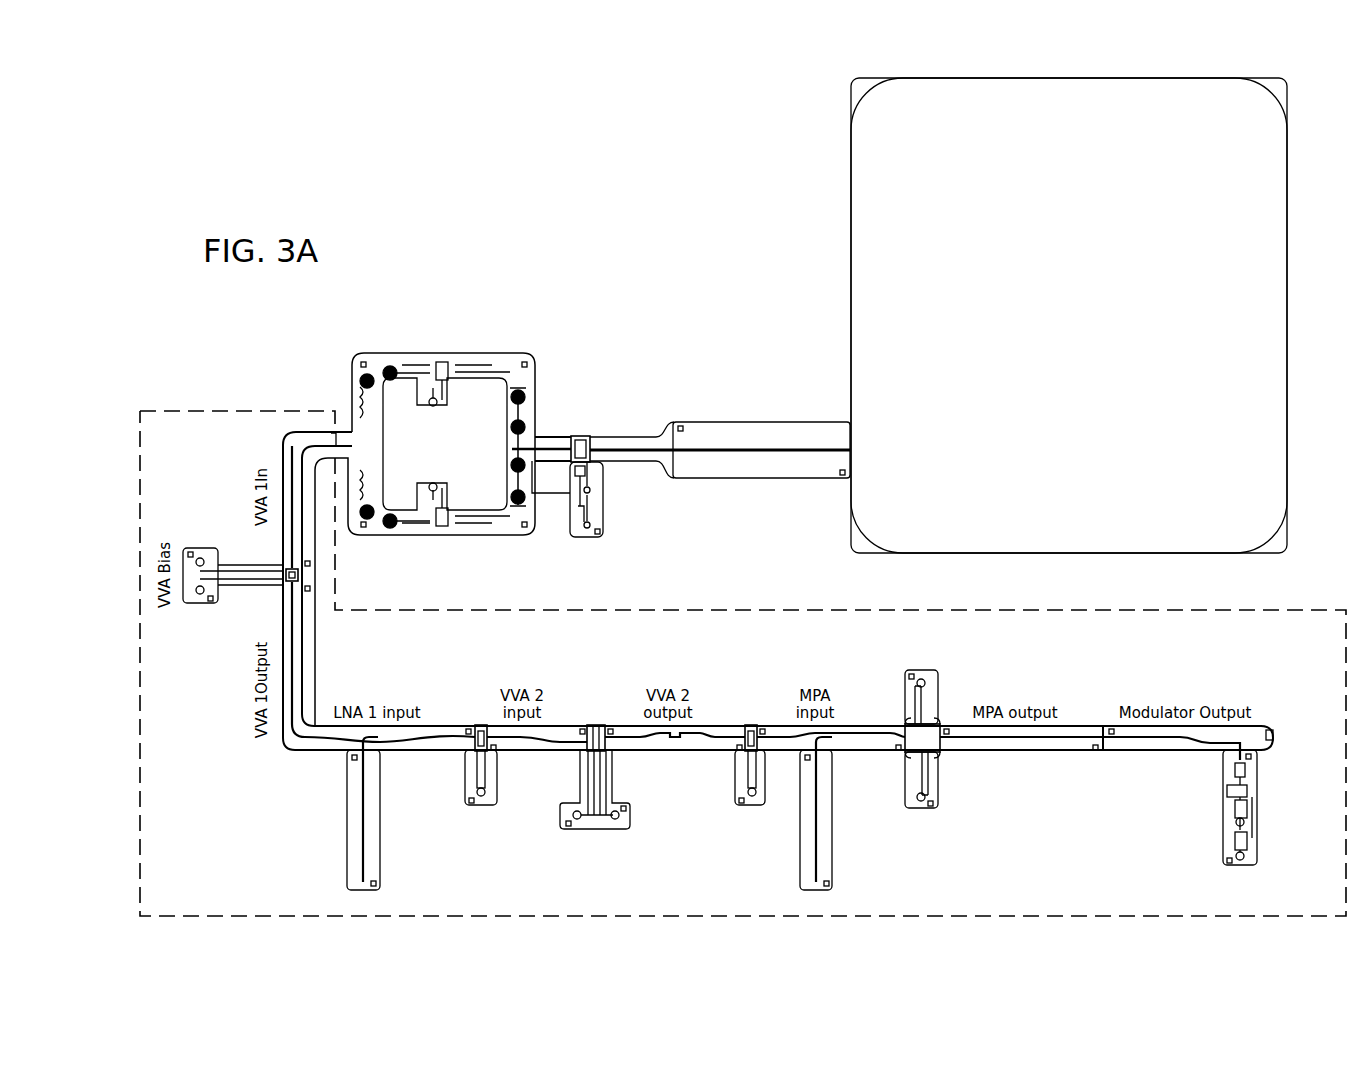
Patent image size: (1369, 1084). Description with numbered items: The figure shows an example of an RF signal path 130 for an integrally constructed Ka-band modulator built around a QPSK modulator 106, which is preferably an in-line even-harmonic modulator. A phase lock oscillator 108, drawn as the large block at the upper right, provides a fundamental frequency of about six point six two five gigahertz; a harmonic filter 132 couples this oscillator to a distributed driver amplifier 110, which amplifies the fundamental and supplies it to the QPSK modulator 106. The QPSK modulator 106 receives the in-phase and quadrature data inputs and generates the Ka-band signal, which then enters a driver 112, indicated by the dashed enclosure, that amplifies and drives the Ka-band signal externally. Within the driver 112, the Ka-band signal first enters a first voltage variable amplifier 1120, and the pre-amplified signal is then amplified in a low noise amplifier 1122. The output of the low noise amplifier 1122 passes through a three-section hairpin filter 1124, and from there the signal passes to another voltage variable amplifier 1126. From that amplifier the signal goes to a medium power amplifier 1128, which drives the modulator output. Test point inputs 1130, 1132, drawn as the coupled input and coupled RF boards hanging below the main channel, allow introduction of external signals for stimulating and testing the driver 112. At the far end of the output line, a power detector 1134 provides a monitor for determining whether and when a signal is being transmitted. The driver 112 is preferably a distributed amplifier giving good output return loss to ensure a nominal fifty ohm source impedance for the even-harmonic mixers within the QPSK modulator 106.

The QPSK modulator 106 is at (462, 453).
The phase lock oscillator 108 is at (1104, 335).
The distributed driver amplifier 110 is at (578, 437).
The driver 112 is at (140, 488).
The RF signal path 130 is at (592, 285).
The harmonic filter 132 is at (700, 425).
The first voltage variable amplifier 1120 is at (317, 580).
The low noise amplifier 1122 is at (482, 726).
The 3-section hairpin filter 1124 is at (596, 726).
The voltage variable amplifier 1126 is at (749, 726).
The medium power amplifier 1128 is at (938, 790).
The test point input 1130 is at (382, 881).
The test point input 1132 is at (835, 881).
The power detector 1134 is at (1258, 846).